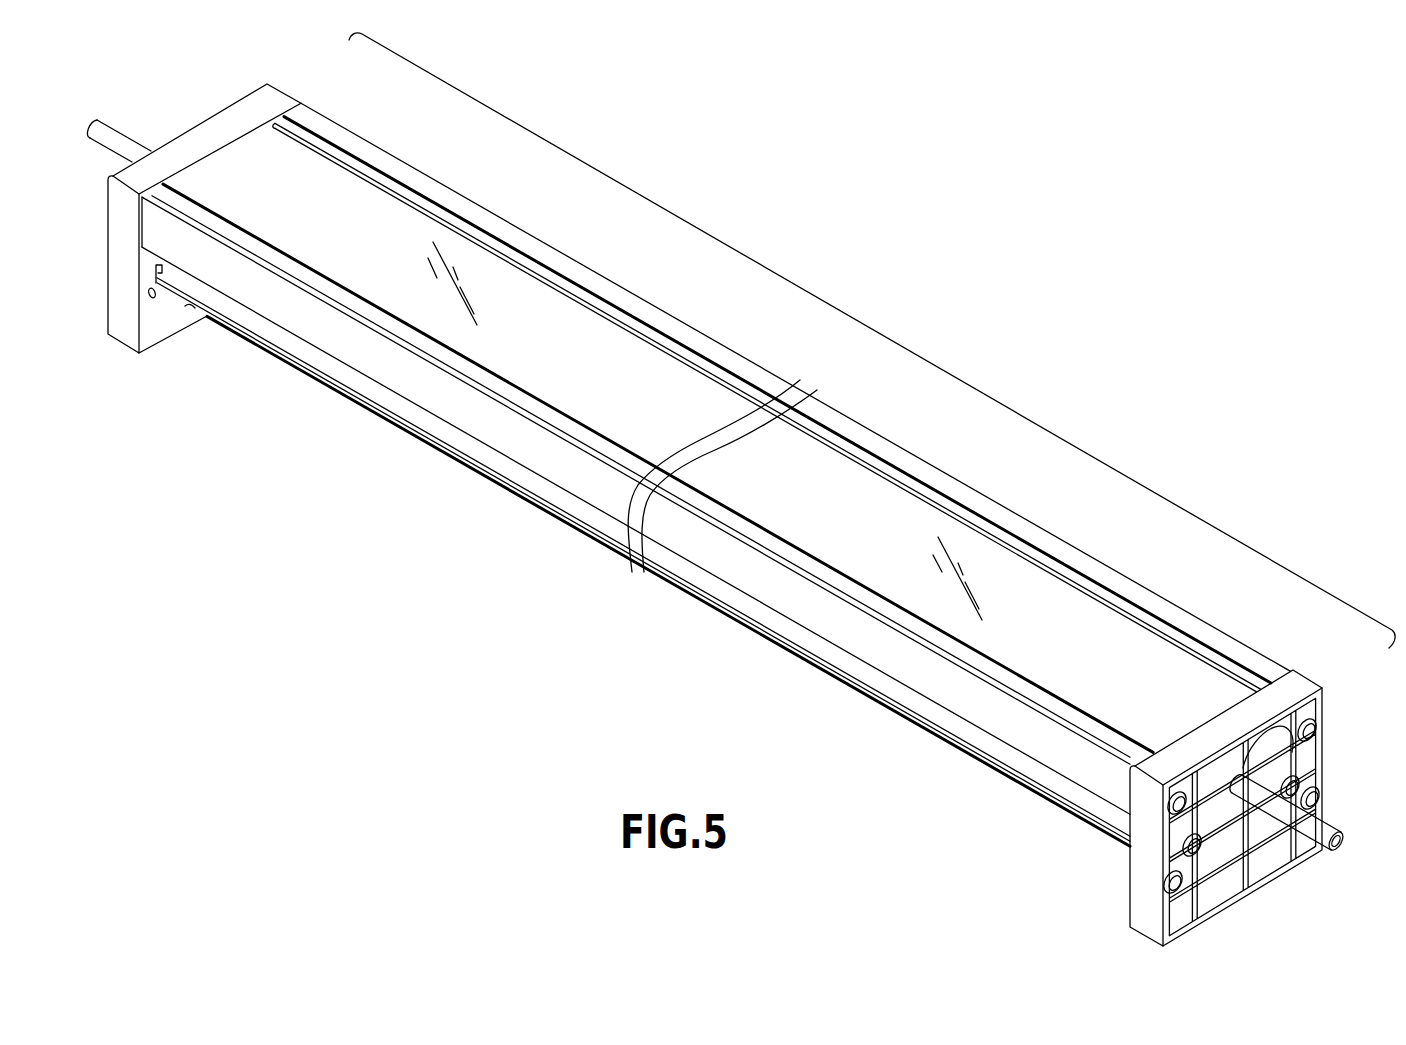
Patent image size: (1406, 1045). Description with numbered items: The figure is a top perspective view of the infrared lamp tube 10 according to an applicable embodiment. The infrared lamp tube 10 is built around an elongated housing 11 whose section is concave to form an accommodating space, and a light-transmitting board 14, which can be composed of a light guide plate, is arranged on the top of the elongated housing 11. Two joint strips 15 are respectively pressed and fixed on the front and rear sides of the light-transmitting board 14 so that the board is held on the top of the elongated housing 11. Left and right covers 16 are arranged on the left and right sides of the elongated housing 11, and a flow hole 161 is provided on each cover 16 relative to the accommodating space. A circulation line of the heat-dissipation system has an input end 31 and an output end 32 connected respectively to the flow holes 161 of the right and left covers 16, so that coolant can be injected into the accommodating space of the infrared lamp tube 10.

The infrared lamp tube 10 is at (866, 333).
The elongated housing 11 is at (914, 718).
The light-transmitting board 14 is at (858, 489).
The joint strips 15 is at (1045, 540).
The left and right covers 16 is at (163, 322).
The flow hole 161 is at (1280, 749).
The input end 31 is at (1327, 833).
The output end 32 is at (125, 139).